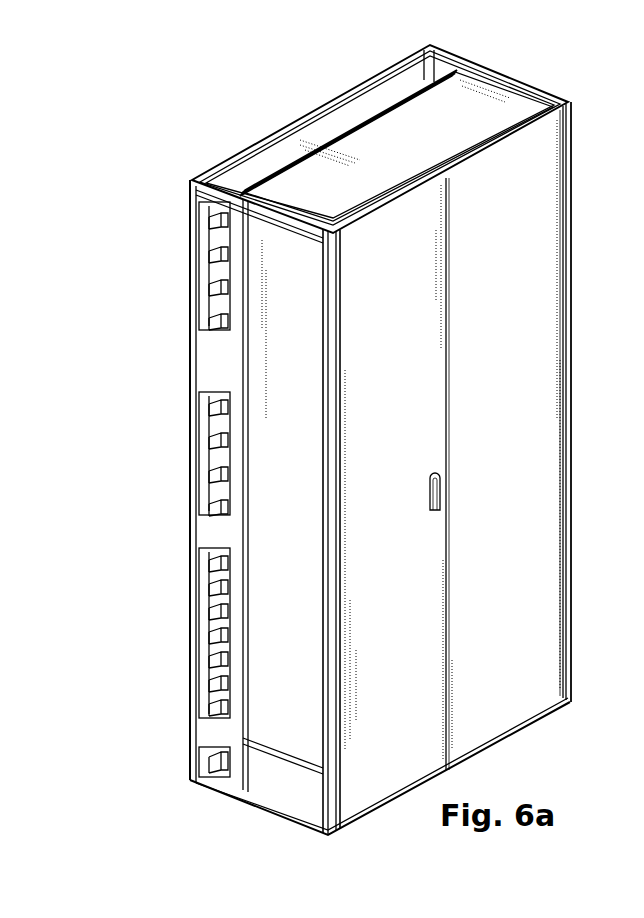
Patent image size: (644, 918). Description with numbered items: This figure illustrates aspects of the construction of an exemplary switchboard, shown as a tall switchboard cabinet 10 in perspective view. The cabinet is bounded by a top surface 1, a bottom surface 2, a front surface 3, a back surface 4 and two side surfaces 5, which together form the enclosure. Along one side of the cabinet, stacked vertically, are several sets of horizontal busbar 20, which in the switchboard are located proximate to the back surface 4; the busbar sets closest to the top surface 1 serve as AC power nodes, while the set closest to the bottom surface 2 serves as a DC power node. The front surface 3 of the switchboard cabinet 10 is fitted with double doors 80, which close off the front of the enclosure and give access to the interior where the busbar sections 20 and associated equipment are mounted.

The switchboard cabinet 10 is at (182, 157).
The top surface 1 is at (483, 113).
The back surface 4 is at (290, 188).
The side surfaces 5 is at (525, 197).
The horizontal busbar 20 is at (190, 272).
The double doors 80 is at (410, 725).
The front surface 3 is at (523, 334).
The bottom surface 2 is at (360, 795).